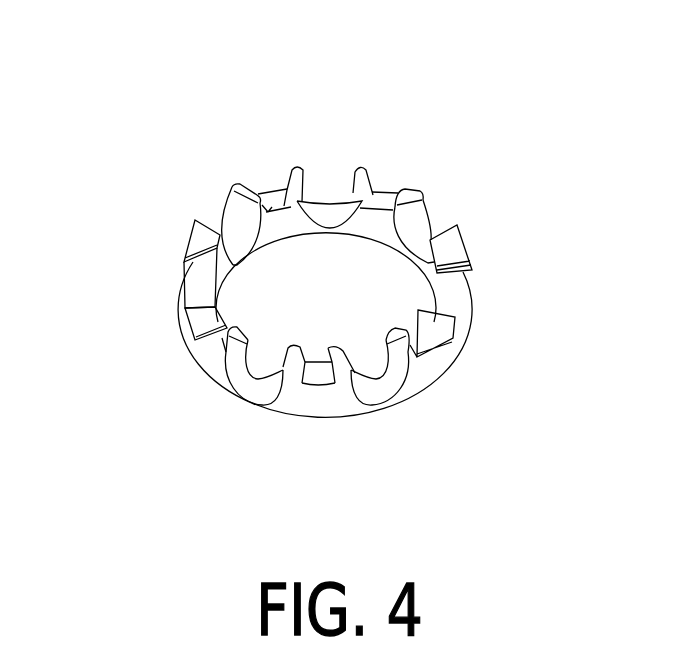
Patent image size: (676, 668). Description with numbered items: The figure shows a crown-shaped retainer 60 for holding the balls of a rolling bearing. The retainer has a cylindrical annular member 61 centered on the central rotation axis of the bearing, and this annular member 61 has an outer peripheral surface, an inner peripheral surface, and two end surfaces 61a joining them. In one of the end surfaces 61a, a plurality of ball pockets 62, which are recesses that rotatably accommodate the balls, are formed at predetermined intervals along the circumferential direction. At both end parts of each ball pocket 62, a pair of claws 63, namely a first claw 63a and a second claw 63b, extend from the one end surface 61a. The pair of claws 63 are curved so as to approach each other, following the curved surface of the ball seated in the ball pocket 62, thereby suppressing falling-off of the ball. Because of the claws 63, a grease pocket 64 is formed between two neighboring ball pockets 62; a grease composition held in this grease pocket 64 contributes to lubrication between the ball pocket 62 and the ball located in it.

The crown-shaped retainer 60 is at (172, 115).
The annular member 61 is at (433, 362).
The end surface 61a is at (270, 190).
The ball pocket 62 is at (327, 183).
The claw 63 is at (537, 123).
The claw 63a is at (408, 183).
The claw 63b is at (472, 238).
The grease pocket 64 is at (223, 332).